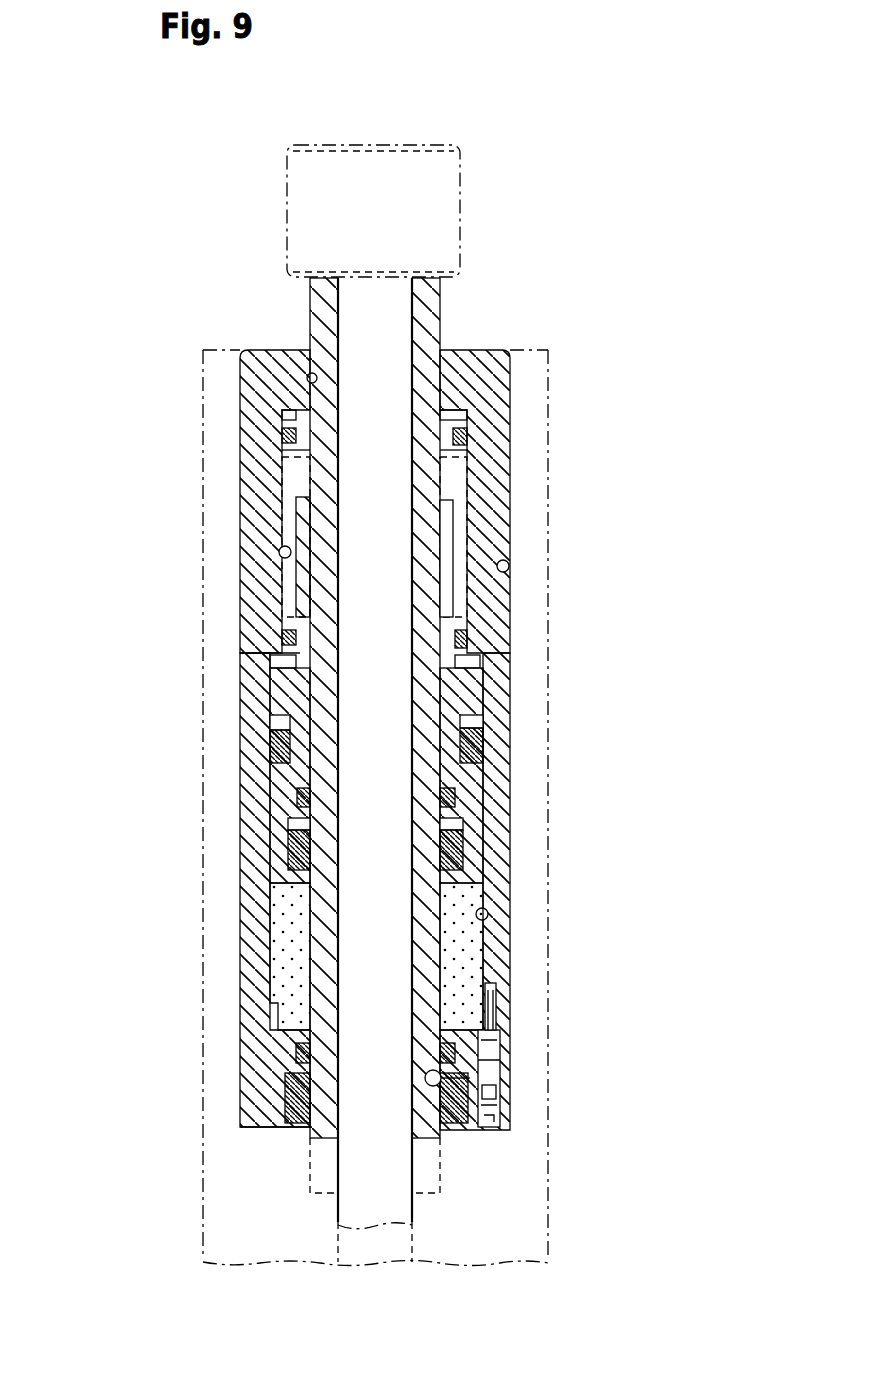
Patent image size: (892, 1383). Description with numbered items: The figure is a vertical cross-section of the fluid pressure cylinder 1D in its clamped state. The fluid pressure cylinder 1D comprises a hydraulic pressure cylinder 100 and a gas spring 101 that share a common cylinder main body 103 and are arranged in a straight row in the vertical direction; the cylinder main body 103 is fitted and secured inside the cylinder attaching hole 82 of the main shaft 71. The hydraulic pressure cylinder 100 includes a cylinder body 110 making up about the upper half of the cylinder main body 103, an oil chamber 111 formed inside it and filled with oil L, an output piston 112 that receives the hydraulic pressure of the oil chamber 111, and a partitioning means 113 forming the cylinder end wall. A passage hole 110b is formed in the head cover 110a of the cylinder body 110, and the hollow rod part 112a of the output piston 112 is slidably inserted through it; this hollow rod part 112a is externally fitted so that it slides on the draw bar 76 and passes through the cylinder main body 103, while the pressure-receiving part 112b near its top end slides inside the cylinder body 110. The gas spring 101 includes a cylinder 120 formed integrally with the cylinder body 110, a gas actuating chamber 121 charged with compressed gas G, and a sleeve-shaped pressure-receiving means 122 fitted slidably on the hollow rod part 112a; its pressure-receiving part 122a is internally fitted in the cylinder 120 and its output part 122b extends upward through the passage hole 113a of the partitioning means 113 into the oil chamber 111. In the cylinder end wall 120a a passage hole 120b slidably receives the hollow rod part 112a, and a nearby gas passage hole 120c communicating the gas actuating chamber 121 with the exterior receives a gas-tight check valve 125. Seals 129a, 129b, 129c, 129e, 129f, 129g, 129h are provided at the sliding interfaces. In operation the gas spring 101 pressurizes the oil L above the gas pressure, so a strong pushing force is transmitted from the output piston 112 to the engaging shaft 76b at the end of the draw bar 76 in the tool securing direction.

The fluid pressure cylinder 1D is at (588, 470).
The main shaft 71 is at (549, 782).
The draw bar 76 is at (408, 1172).
The engaging shaft 76b is at (461, 213).
The cylinder attaching hole 82 is at (509, 570).
The hydraulic pressure cylinder 100 is at (233, 497).
The gas spring 101 is at (227, 815).
The cylinder main body 103 is at (233, 645).
The cylinder body 110 is at (247, 447).
The head cover 110a is at (457, 377).
The passage hole 110b is at (307, 373).
The oil chamber 111 is at (279, 552).
The output piston 112 is at (455, 676).
The hollow rod part 112a is at (427, 326).
The pressure-receiving part 112b is at (465, 420).
The partitioning means 113 is at (462, 628).
The passage hole 113a is at (303, 655).
The cylinder 120 is at (253, 912).
The cylinder end wall 120a is at (275, 1122).
The passage hole 120b is at (490, 1062).
The gas passage hole 120c is at (500, 1033).
The gas actuating chamber 121 is at (488, 916).
The pressure-receiving means 122 is at (263, 770).
The pressure-receiving part 122a is at (483, 806).
The output part 122b is at (452, 532).
The check valve 125 is at (500, 1082).
The seal 129a is at (280, 428).
The seal 129b is at (283, 630).
The seal 129c is at (483, 735).
The seal 129e is at (290, 816).
The seal 129f is at (293, 852).
The seal 129g is at (296, 1045).
The seal 129h is at (290, 1094).
The compressed gas G is at (472, 960).
The oil L is at (459, 475).